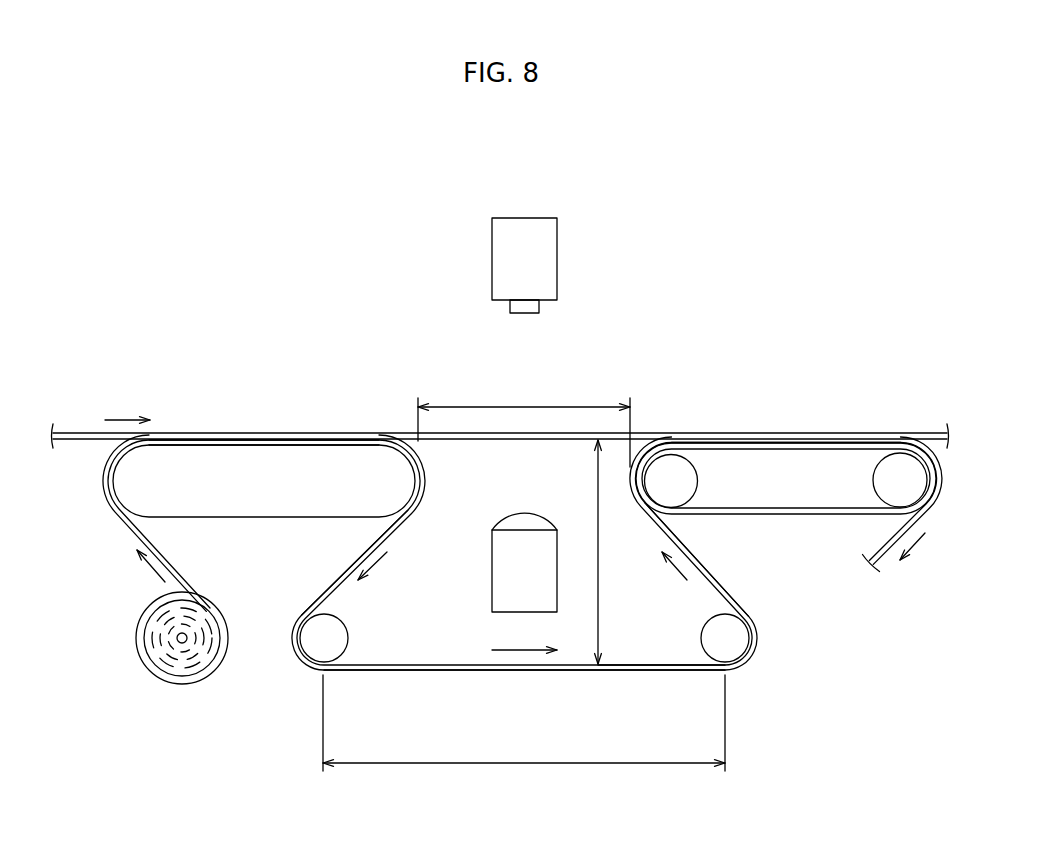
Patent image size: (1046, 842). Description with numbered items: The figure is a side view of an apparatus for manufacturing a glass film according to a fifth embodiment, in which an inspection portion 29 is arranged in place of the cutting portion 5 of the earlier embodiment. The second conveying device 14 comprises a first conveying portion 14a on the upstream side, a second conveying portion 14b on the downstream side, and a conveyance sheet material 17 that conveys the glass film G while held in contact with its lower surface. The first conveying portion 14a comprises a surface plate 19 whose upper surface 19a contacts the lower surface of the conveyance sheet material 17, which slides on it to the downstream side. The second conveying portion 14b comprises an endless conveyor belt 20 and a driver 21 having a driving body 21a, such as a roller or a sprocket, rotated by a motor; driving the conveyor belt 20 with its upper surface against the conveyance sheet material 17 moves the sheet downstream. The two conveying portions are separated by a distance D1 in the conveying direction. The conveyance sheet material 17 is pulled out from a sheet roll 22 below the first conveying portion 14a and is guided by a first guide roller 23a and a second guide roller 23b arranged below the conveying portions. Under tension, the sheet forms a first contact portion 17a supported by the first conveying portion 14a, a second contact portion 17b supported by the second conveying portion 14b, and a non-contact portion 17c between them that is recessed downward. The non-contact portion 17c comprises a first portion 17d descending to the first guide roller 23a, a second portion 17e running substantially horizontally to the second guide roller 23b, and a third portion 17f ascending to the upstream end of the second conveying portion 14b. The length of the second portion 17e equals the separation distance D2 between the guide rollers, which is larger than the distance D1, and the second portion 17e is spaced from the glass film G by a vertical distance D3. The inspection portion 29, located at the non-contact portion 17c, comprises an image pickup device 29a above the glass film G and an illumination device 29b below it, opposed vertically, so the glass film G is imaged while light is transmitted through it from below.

The cutting portion 5 is at (688, 272).
The second conveying device 14 is at (110, 636).
The first conveying portion 14a is at (328, 416).
The second conveying portion 14b is at (712, 418).
The conveyance sheet material 17 is at (130, 533).
The first contact portion 17a is at (207, 439).
The second contact portion 17b is at (782, 440).
The non-contact portion 17c is at (448, 669).
The first portion 17d is at (352, 553).
The second portion 17e is at (630, 670).
The third portion 17f is at (705, 563).
The surface plate 19 is at (226, 517).
The upper surface 19a is at (285, 446).
The conveyor belt 20 is at (822, 515).
The driver 21 is at (868, 466).
The driving body 21a is at (897, 468).
The sheet roll 22 is at (152, 676).
The first guide roller 23a is at (312, 647).
The second guide roller 23b is at (735, 641).
The inspection portion 29 is at (607, 228).
The image pickup device 29a is at (492, 265).
The illumination device 29b is at (492, 569).
The glass film G is at (78, 432).
The separation distance D1 is at (524, 423).
The separation distance D2 is at (524, 723).
The separation distance D3 is at (612, 552).